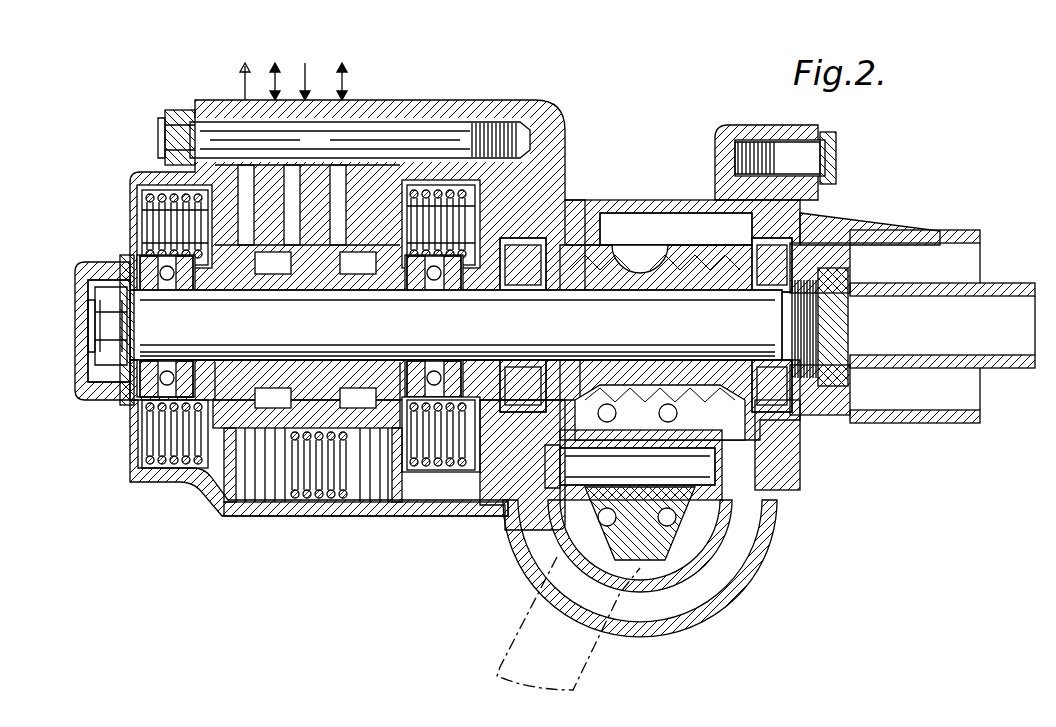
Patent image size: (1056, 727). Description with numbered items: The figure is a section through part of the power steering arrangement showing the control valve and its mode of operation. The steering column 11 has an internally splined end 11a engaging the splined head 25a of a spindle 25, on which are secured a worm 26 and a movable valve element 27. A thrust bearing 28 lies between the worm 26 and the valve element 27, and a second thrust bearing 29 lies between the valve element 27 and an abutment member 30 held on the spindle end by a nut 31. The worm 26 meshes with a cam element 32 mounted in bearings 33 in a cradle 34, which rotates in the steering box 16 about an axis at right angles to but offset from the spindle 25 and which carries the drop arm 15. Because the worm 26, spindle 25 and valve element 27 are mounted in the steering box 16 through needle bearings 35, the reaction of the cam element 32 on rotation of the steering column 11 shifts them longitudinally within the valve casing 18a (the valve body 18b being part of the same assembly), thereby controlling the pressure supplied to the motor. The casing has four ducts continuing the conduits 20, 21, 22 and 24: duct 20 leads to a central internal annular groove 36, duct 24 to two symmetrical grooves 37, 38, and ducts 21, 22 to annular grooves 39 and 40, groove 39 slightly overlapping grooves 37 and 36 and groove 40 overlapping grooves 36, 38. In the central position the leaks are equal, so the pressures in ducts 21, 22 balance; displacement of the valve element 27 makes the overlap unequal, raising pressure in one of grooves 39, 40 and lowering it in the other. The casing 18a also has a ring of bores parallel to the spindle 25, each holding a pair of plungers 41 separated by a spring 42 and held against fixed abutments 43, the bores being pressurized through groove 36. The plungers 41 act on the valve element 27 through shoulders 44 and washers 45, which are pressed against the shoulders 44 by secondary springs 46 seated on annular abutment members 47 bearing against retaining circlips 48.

The steering column 11 is at (998, 290).
The internally splined end 11a is at (826, 395).
The drop arm 15 is at (520, 630).
The steering box 16 is at (622, 205).
The valve casing 18a is at (225, 100).
The valve housing 18b is at (372, 100).
The conduit 20 is at (336, 112).
The conduit 21 is at (292, 110).
The conduit 22 is at (345, 110).
The conduit 24 is at (248, 110).
The spindle 25 is at (638, 315).
The splined head 25a is at (810, 245).
The worm 26 is at (585, 230).
The movable valve element 27 is at (168, 478).
The thrust bearing 28 is at (440, 392).
The second thrust bearing 29 is at (150, 395).
The abutment member 30 is at (95, 290).
The nut 31 is at (88, 372).
The cam element 32 is at (690, 567).
The bearings 33 is at (705, 512).
The cradle 34 is at (693, 553).
The needle bearings 35 is at (518, 270).
The central internal annular groove 36 is at (316, 425).
The internal annular groove 37 is at (240, 502).
The internal annular groove 38 is at (400, 502).
The annular groove 39 is at (265, 502).
The annular groove 40 is at (378, 502).
The plungers 41 is at (283, 502).
The spring 42 is at (318, 505).
The abutments 43 is at (222, 500).
The shoulders 44 is at (272, 400).
The washers 45 is at (200, 195).
The secondary springs 46 is at (150, 200).
The annular abutment members 47 is at (150, 220).
The retaining circlips 48 is at (190, 262).